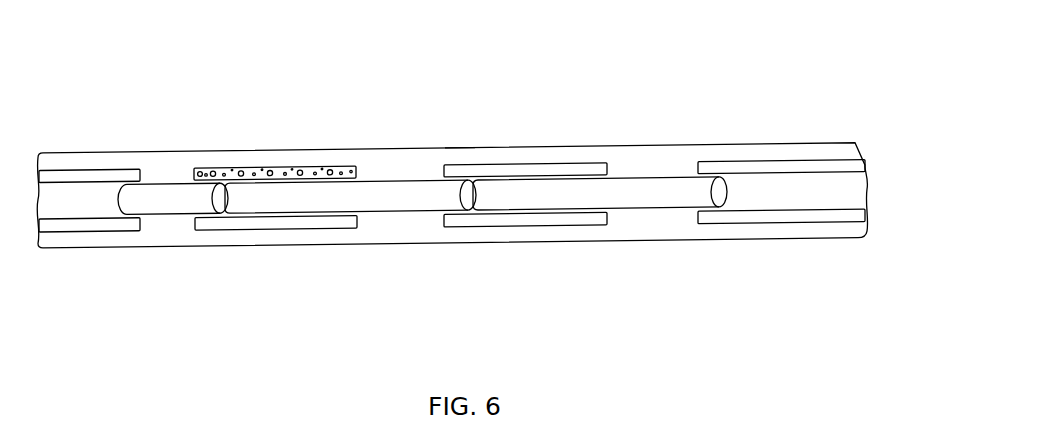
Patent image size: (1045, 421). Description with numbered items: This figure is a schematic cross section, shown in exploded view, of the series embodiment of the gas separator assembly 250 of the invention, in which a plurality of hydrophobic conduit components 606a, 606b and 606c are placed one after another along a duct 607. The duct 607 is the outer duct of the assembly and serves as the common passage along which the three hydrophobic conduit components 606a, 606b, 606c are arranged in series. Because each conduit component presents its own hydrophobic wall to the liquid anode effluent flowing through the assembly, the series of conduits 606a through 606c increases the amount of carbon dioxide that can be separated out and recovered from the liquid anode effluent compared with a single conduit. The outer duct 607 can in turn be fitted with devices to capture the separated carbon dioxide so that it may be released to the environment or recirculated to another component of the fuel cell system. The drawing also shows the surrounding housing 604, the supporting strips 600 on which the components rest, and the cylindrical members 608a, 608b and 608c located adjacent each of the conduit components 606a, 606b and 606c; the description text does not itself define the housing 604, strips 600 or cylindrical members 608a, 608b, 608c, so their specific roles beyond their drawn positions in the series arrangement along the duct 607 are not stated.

The assembly 250 is at (436, 37).
The support strips 600 is at (62, 233).
The housing 604 is at (867, 218).
The hydrophobic conduit component 606a is at (212, 168).
The hydrophobic conduit component 606b is at (572, 165).
The hydrophobic conduit component 606c is at (750, 160).
The duct 607 is at (460, 147).
The cylindrical element 608a is at (220, 203).
The cylindrical element 608b is at (468, 200).
The cylindrical element 608c is at (727, 196).